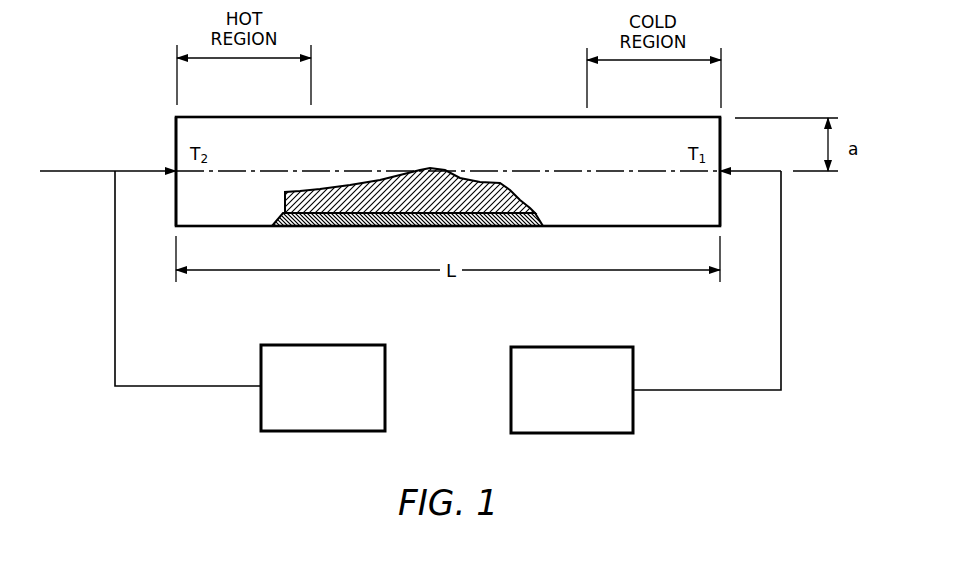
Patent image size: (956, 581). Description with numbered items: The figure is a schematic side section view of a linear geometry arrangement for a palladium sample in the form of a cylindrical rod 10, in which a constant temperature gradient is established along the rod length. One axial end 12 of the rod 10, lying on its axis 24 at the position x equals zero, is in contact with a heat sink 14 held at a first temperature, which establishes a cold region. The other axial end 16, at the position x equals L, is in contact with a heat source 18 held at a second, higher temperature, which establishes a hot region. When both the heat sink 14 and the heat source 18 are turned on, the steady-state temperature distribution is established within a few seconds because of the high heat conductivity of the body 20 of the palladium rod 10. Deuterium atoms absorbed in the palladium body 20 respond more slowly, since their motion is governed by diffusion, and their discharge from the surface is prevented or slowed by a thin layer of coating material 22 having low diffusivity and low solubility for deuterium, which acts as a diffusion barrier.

The cylindrical rod 10 is at (399, 117).
The axial end 12 is at (725, 130).
The heat sink 14 is at (587, 421).
The axial end 16 is at (176, 140).
The heat source 18 is at (292, 420).
The body 20 is at (428, 202).
The coating material 22 is at (315, 226).
The axis 24 is at (580, 173).